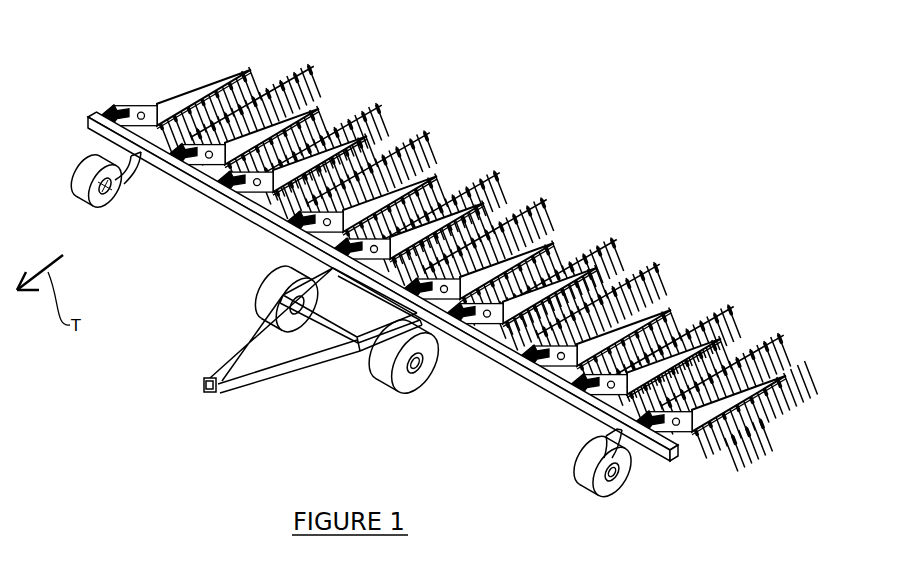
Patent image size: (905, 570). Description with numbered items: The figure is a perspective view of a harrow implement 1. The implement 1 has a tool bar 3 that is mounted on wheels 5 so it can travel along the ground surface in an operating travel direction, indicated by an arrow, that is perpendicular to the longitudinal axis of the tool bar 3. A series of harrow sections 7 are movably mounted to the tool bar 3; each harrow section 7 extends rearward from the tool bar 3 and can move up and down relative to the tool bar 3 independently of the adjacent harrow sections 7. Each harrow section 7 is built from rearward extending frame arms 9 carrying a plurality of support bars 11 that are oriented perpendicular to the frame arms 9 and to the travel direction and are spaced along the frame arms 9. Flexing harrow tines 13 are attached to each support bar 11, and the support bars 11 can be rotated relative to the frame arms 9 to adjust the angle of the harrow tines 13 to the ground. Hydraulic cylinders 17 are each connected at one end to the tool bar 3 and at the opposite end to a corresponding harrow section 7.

The harrow implement 1 is at (598, 151).
The tool bar 3 is at (516, 376).
The wheels 5 is at (382, 383).
The harrow section 7 is at (640, 288).
The frame arm 9 is at (598, 266).
The support bar 11 is at (762, 437).
The harrow tine 13 is at (831, 412).
The hydraulic cylinder 17 is at (110, 108).